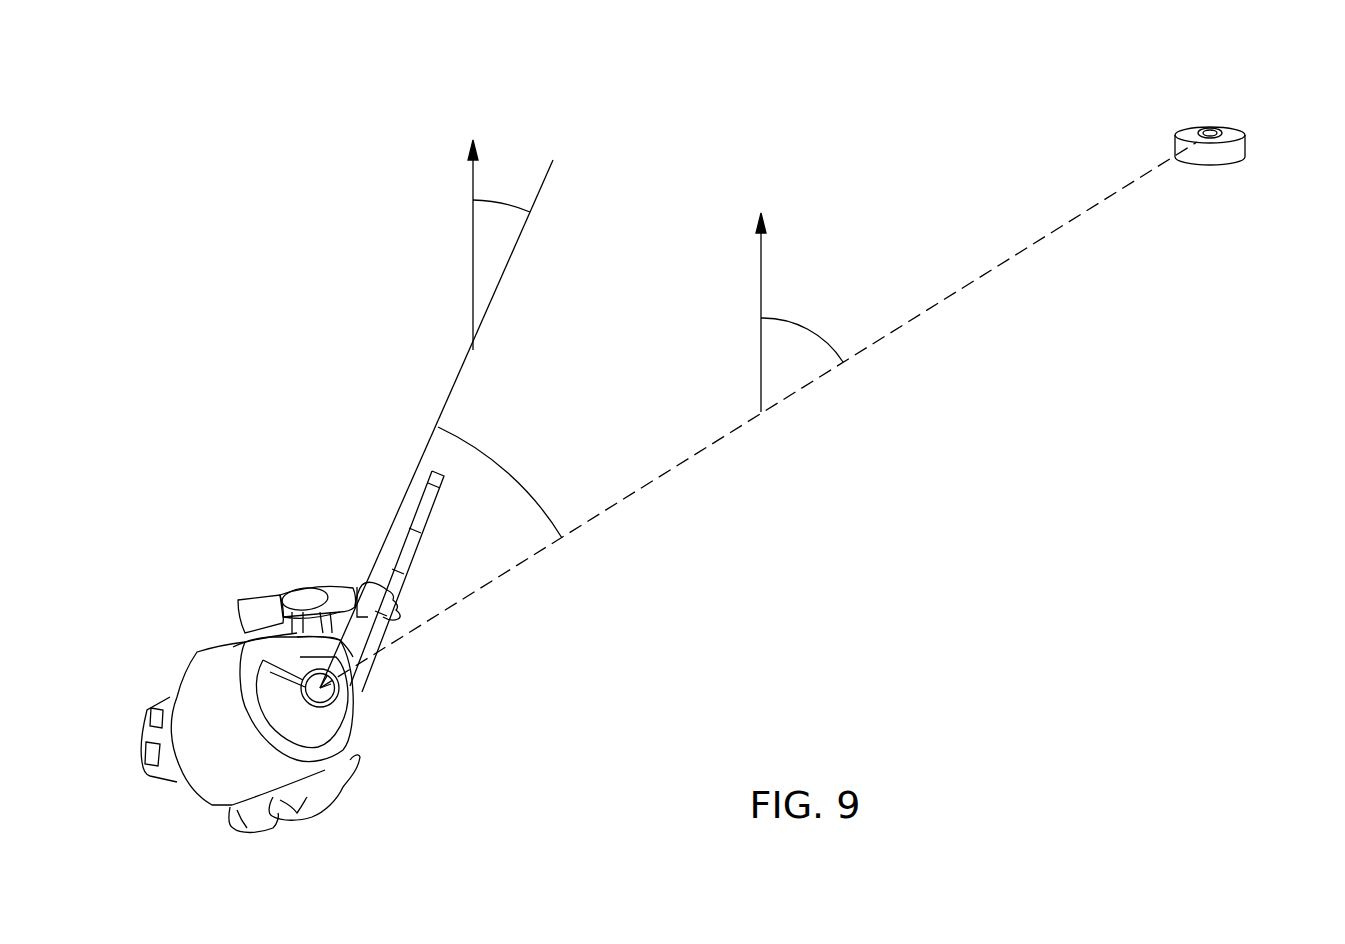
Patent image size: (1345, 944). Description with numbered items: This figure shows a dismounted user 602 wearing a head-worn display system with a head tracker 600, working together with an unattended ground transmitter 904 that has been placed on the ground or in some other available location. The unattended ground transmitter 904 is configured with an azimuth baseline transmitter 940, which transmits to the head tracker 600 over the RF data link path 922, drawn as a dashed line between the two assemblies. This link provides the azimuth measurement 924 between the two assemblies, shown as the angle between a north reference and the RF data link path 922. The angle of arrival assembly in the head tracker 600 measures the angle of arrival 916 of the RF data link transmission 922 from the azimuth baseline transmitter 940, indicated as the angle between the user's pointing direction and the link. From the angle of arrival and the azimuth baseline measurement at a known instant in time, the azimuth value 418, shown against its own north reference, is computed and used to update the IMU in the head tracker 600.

The head tracker 600 is at (343, 690).
The user 602 is at (255, 600).
The azimuth value 418 is at (505, 200).
The angle of arrival 916 is at (515, 477).
The RF data link path 922 is at (992, 268).
The azimuth measurement 924 is at (813, 332).
The unattended ground transmitter 904 is at (1186, 104).
The azimuth baseline transmitter 940 is at (1222, 127).